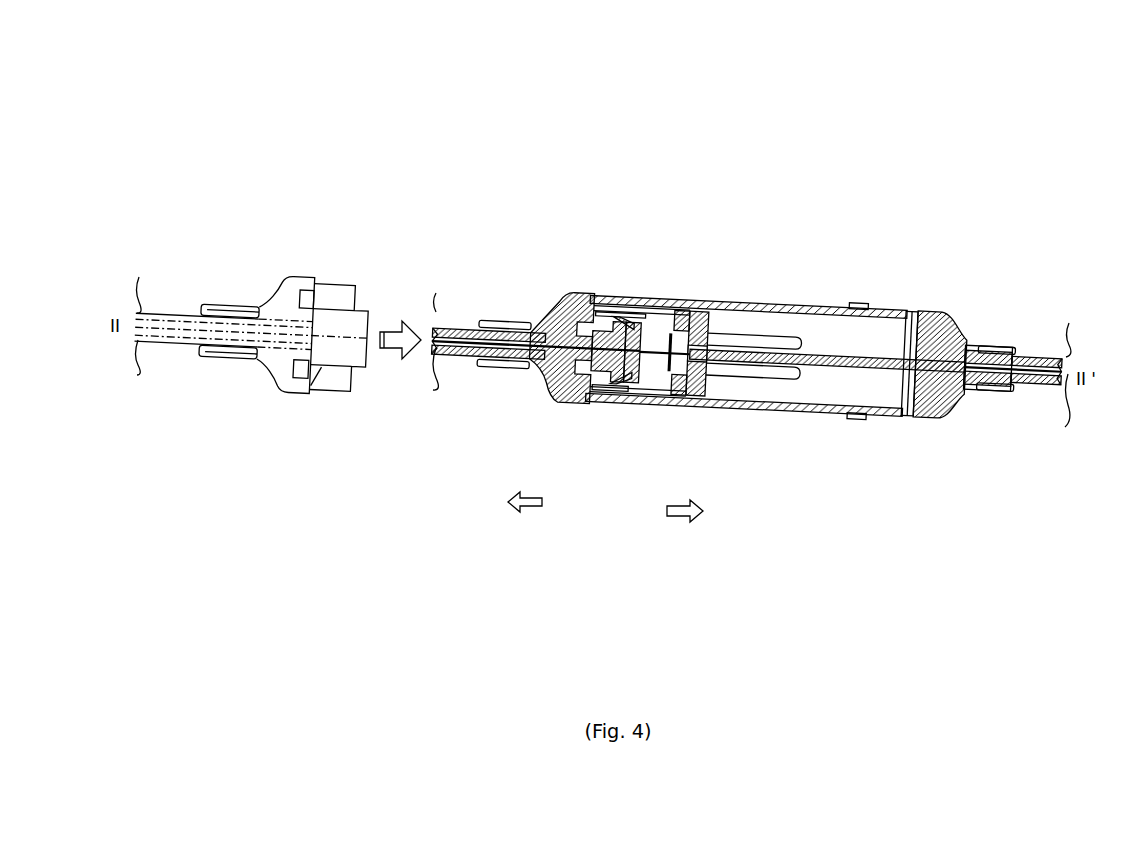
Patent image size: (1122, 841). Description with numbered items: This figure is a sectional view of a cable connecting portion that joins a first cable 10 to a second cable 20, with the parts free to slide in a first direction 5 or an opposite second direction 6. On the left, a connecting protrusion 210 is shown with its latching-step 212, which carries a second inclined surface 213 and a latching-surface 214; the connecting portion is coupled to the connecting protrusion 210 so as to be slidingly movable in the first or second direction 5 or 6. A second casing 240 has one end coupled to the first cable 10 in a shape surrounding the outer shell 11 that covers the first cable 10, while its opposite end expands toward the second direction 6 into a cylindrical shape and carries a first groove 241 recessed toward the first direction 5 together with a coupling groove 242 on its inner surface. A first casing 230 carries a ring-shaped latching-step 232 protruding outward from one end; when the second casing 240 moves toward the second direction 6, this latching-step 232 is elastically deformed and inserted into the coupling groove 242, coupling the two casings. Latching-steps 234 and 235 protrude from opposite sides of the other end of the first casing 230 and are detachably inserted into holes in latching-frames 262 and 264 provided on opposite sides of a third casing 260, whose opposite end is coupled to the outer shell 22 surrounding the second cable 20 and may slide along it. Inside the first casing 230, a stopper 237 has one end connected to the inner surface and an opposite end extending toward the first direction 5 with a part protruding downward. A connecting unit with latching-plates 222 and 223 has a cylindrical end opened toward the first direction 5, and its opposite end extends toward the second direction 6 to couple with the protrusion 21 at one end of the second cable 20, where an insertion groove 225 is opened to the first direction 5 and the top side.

The first cable 10 is at (181, 342).
The outer shell 11 is at (172, 320).
The second casing 240 is at (283, 306).
The coupling groove 242 is at (330, 292).
The first groove 241 is at (313, 394).
The latching-surface 214 is at (342, 394).
The second inclined surface 213 is at (360, 364).
The latching-step 212 is at (388, 448).
The connecting protrusion 210 is at (277, 482).
The first casing 230 is at (812, 237).
The latching-step 232 is at (653, 300).
The latching-plate 222 is at (606, 302).
The insertion groove 225 is at (616, 313).
The latching-plate 223 is at (565, 396).
The protrusion 21 is at (689, 402).
The stopper 237 is at (780, 365).
The latching-step 234 is at (867, 313).
The latching-step 235 is at (866, 418).
The latching-frame 264 is at (903, 310).
The latching-frame 262 is at (914, 311).
The third casing 260 is at (878, 245).
The second cable 20 is at (823, 363).
The outer shell 22 is at (1040, 355).
The first direction 5 is at (517, 503).
The second direction 6 is at (693, 512).